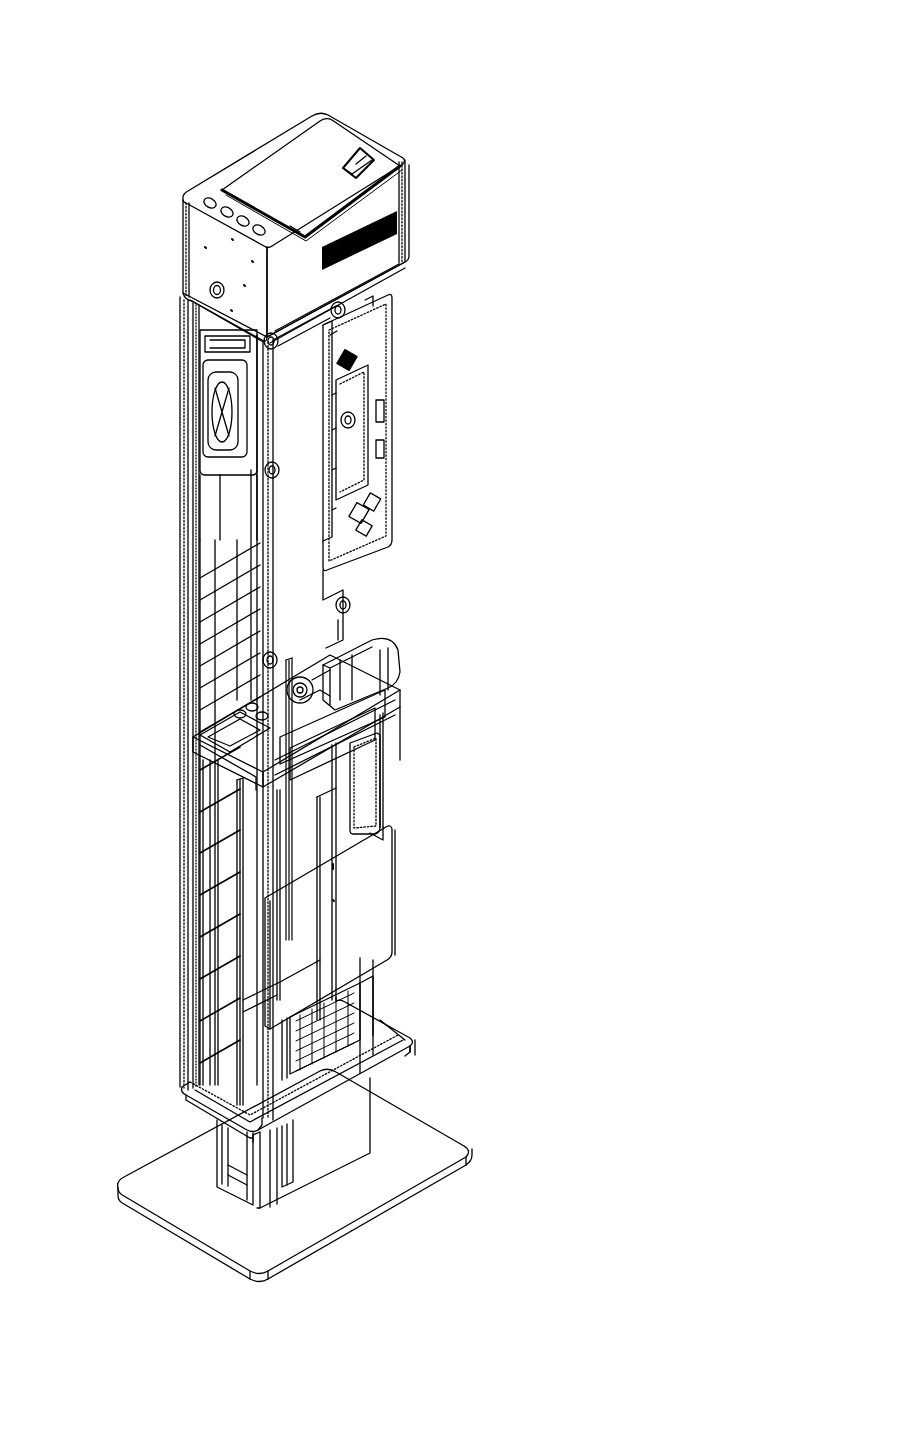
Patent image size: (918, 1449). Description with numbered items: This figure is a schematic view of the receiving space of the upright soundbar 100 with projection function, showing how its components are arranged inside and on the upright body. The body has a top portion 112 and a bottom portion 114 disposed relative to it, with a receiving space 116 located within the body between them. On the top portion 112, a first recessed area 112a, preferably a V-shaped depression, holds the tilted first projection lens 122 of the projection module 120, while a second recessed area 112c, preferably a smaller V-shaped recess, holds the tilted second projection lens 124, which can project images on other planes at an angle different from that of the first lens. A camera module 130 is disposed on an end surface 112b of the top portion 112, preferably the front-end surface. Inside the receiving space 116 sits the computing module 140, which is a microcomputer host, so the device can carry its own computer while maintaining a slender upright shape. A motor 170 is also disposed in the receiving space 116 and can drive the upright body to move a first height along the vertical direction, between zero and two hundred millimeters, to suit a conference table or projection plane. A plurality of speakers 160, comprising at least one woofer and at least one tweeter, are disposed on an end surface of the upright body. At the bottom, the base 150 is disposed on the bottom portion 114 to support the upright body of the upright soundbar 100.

The upright soundbar with projection function 100 is at (158, 46).
The top portion 112 is at (322, 132).
The first recessed area 112a is at (250, 172).
The end surface 112b is at (180, 250).
The second recessed area 112c is at (355, 165).
The bottom portion 114 is at (182, 1087).
The receiving space 116 is at (227, 615).
The projection module 120 is at (548, 136).
The first projection lens 122 is at (290, 226).
The second projection lens 124 is at (356, 164).
The camera module 130 is at (205, 290).
The computing module 140 is at (362, 1022).
The base 150 is at (375, 1188).
The speakers 160 is at (200, 430).
The motor 170 is at (373, 650).